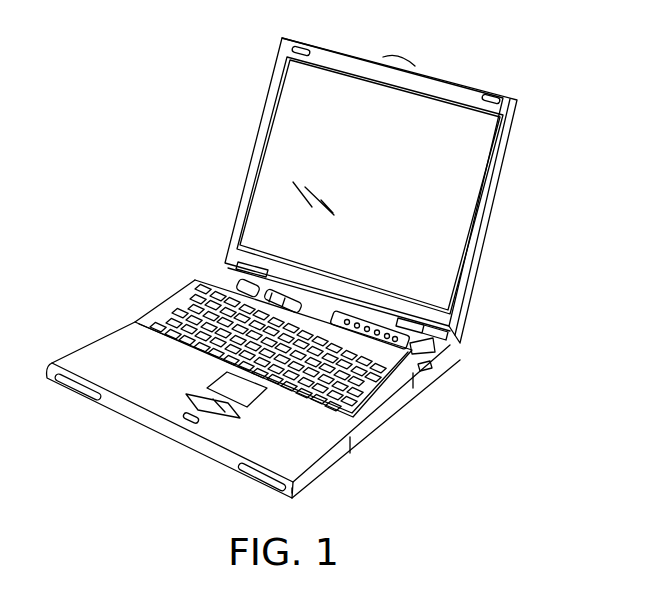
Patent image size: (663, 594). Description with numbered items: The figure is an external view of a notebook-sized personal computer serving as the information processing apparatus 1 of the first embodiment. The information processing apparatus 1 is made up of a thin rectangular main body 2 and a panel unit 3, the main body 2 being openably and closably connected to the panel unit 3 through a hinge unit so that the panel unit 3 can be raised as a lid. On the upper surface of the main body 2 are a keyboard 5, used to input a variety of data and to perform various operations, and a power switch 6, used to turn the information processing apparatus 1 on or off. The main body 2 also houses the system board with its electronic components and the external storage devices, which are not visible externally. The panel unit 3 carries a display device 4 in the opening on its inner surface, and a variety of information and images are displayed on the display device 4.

The information processing apparatus 1 is at (524, 69).
The main body 2 is at (253, 364).
The panel unit 3 is at (378, 187).
The display device 4 is at (482, 145).
The keyboard 5 is at (423, 370).
The power switch 6 is at (248, 289).